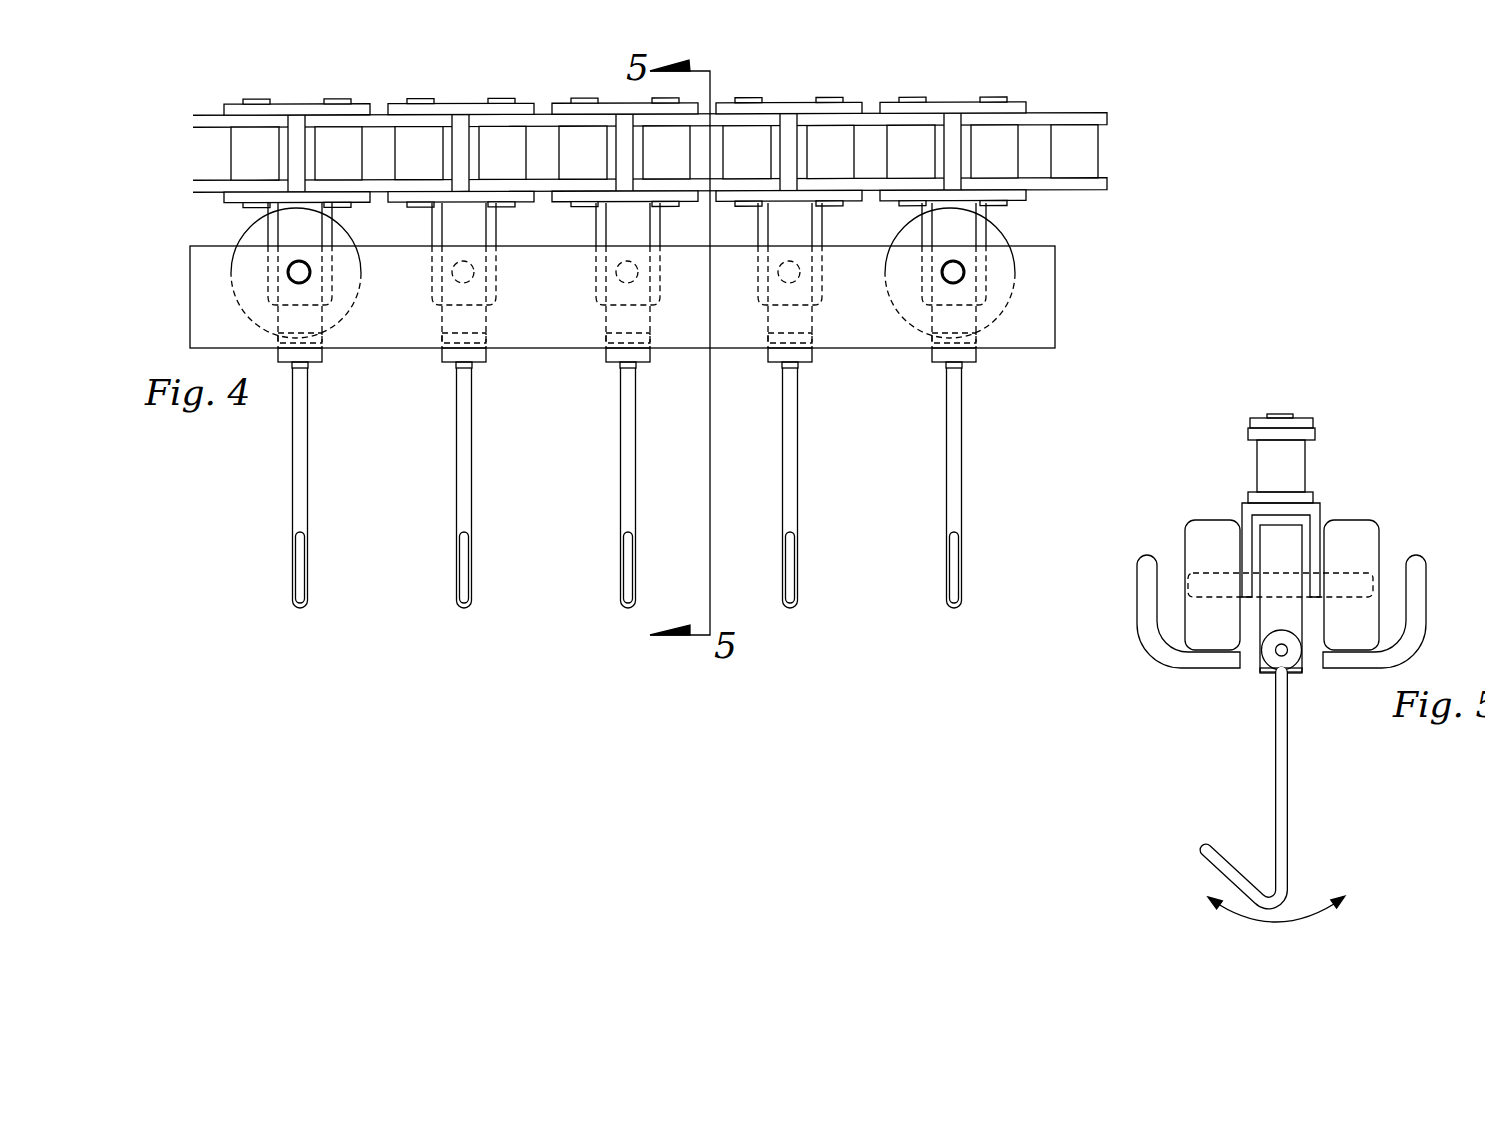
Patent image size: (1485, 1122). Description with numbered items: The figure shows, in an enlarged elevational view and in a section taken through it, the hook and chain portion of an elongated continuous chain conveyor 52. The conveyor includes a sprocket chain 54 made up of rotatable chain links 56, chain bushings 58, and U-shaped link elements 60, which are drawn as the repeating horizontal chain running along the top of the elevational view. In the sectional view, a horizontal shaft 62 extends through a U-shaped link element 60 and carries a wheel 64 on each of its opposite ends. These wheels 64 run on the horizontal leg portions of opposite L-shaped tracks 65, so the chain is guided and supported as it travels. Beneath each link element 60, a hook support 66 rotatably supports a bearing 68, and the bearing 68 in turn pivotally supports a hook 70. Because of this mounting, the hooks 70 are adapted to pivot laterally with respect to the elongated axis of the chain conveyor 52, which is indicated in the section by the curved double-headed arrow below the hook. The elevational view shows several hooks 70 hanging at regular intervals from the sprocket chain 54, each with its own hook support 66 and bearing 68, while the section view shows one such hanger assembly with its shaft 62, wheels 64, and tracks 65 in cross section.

In FIG. 4, the chain conveyor 52 is at (1180, 147).
In FIG. 5, the chain conveyor 52 is at (1352, 440).
In FIG. 4, the sprocket chain 54 is at (1110, 118).
In FIG. 5, the sprocket chain 54 is at (1258, 455).
In FIG. 4, the chain links 56 is at (247, 120).
In FIG. 5, the chain links 56 is at (1258, 432).
In FIG. 4, the chain bushings 58 is at (243, 170).
In FIG. 5, the chain bushings 58 is at (1306, 460).
In FIG. 4, the U-shaped link element 60 is at (333, 258).
In FIG. 5, the U-shaped link element 60 is at (1318, 513).
In FIG. 4, the horizontal shaft 62 is at (324, 307).
In FIG. 5, the horizontal shaft 62 is at (1278, 585).
In FIG. 4, the wheel 64 is at (343, 221).
In FIG. 5, the wheel 64 is at (1192, 532).
In FIG. 4, the L-shaped tracks 65 is at (1053, 283).
In FIG. 5, the L-shaped tracks 65 is at (1147, 580).
In FIG. 4, the hook support 66 is at (278, 320).
In FIG. 5, the hook support 66 is at (1303, 612).
In FIG. 4, the bearing 68 is at (323, 363).
In FIG. 5, the bearing 68 is at (1268, 670).
In FIG. 4, the hooks 70 is at (293, 490).
In FIG. 5, the hooks 70 is at (1280, 730).